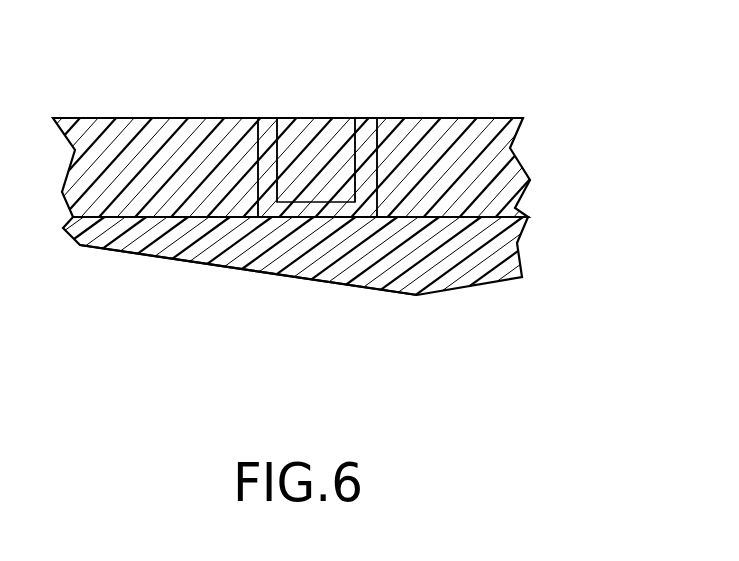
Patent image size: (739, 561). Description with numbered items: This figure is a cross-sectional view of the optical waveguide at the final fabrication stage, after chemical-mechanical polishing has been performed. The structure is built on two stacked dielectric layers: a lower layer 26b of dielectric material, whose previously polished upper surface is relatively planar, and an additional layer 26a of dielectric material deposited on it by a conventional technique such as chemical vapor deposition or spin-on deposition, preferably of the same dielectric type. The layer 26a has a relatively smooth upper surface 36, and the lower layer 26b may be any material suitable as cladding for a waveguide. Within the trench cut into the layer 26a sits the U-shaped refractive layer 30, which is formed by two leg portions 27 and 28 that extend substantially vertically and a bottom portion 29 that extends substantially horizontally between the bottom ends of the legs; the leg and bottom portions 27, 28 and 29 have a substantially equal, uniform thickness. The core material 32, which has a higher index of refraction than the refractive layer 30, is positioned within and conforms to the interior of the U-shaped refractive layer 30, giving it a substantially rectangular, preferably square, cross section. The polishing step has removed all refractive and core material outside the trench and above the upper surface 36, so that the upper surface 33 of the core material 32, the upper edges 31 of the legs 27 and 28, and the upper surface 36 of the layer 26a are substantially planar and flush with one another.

The additional layer of dielectric material 26a is at (492, 150).
The lower layer of dielectric material 26b is at (503, 250).
The upper surface of the layer 26a 36 is at (122, 117).
The U-shaped refractive layer 30 is at (392, 119).
The leg portion 27 is at (268, 167).
The leg portion 28 is at (367, 178).
The upper edges of the U-shaped refractive layer 31 is at (267, 119).
The core material 32 is at (320, 158).
The upper surface of the core material 33 is at (332, 119).
The bottom portion 29 is at (228, 256).